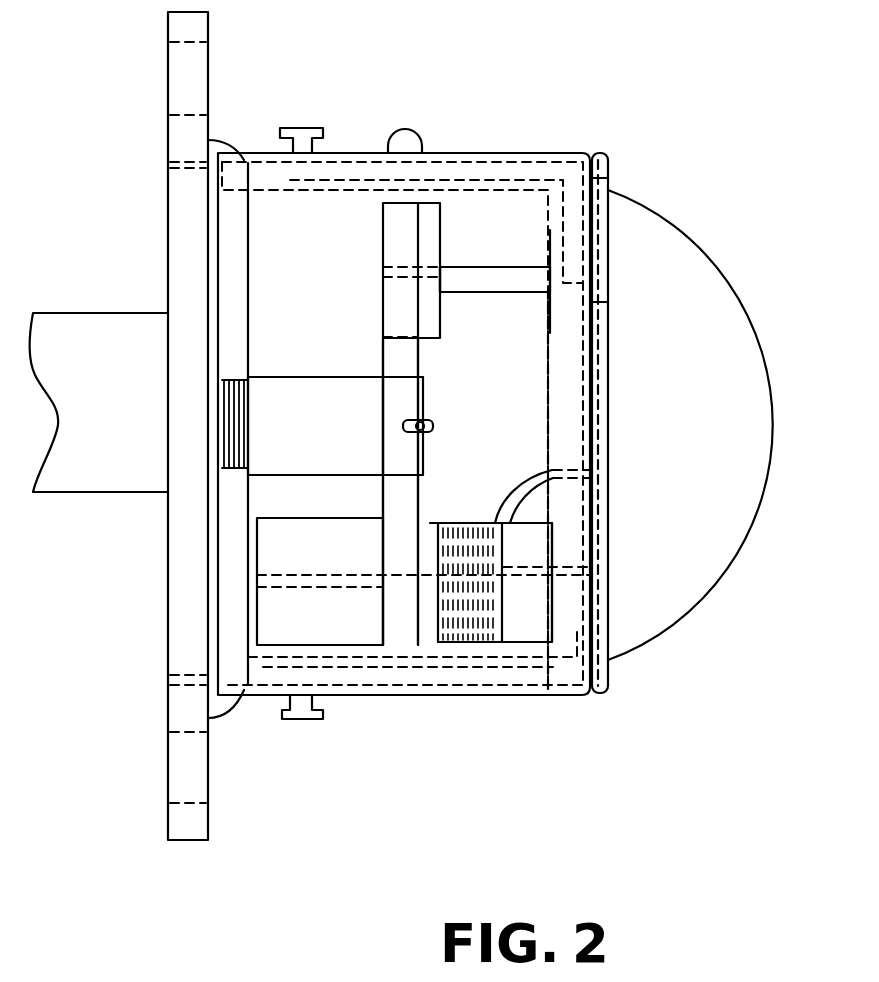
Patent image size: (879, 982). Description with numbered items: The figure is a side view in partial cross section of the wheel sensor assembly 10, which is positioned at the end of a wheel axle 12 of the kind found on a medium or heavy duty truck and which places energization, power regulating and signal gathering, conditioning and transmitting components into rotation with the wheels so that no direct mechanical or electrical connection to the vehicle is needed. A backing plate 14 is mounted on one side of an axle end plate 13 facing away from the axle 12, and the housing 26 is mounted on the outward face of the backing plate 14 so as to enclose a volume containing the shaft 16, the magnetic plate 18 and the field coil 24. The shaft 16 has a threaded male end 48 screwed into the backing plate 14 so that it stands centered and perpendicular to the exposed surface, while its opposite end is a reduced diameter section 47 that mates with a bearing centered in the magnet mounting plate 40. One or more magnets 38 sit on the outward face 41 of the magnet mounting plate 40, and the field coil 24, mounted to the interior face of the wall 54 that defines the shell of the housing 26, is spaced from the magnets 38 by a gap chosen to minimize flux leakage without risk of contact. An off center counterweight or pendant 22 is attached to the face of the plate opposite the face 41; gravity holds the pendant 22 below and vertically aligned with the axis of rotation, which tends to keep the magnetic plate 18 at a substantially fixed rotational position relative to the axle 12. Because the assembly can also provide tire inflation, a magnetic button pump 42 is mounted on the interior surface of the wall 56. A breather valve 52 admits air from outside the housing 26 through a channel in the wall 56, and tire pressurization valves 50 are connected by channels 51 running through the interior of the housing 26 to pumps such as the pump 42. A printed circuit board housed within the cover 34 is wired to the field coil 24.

The wheel sensor assembly 10 is at (692, 103).
The wheel axle 12 is at (82, 493).
The axle end plate 13 is at (168, 233).
The backing plate 14 is at (230, 147).
The shaft 16 is at (345, 377).
The magnetic plate 18 is at (417, 650).
The pendant 22 is at (342, 647).
The field coil 24 is at (502, 643).
The housing 26 is at (588, 153).
The cover 34 is at (718, 582).
The magnet 38 is at (440, 330).
The magnet mounting plate 40 is at (383, 258).
The outward face 41 is at (423, 365).
The magnetic button pump 42 is at (500, 265).
The reduced diameter section 47 is at (403, 470).
The threaded male end 48 is at (228, 380).
The tire pressurization valve 50 is at (322, 128).
The channel 51 is at (503, 150).
The breather valve 52 is at (423, 127).
The wall 54 is at (523, 482).
The wall 56 is at (548, 418).